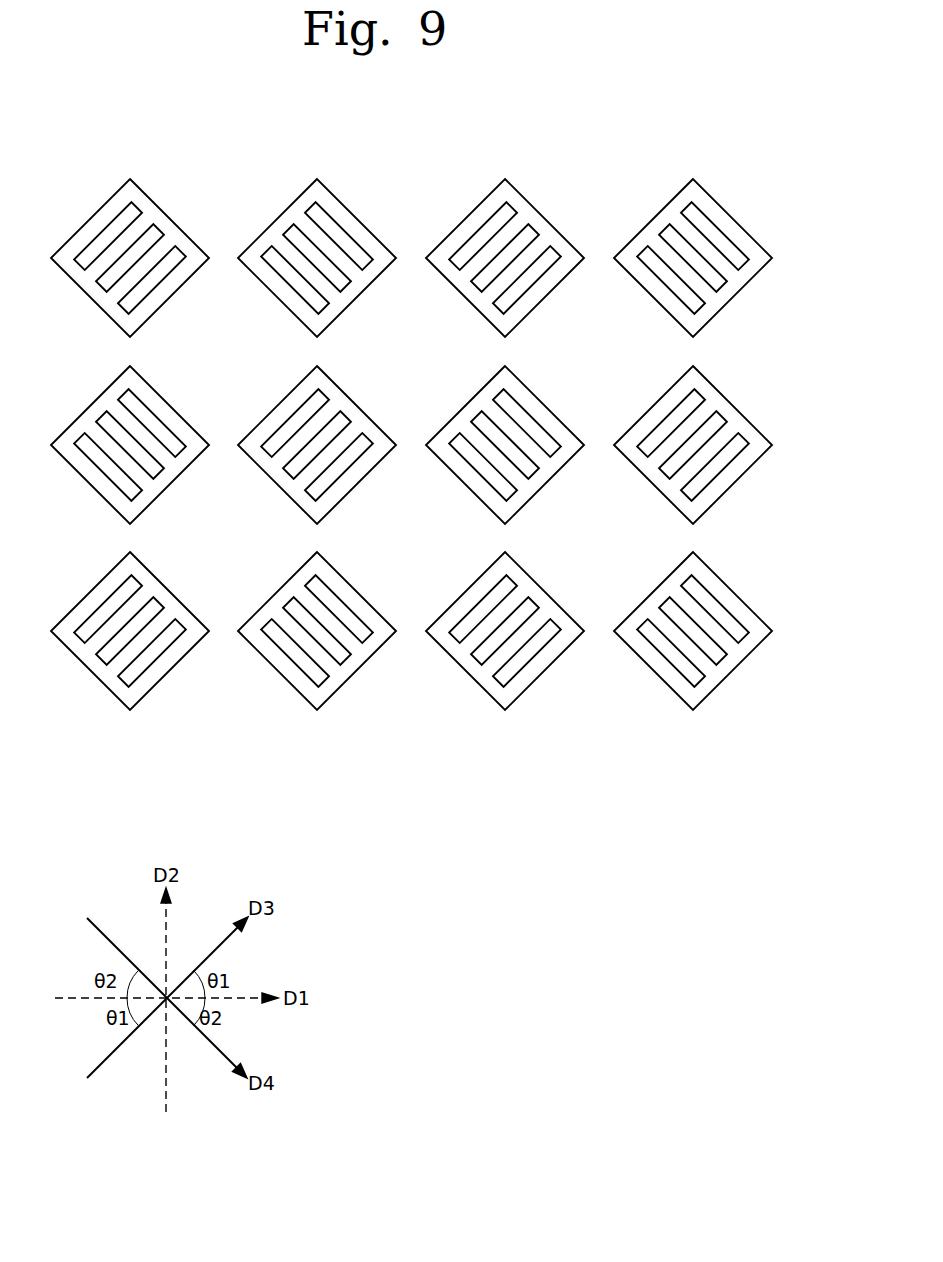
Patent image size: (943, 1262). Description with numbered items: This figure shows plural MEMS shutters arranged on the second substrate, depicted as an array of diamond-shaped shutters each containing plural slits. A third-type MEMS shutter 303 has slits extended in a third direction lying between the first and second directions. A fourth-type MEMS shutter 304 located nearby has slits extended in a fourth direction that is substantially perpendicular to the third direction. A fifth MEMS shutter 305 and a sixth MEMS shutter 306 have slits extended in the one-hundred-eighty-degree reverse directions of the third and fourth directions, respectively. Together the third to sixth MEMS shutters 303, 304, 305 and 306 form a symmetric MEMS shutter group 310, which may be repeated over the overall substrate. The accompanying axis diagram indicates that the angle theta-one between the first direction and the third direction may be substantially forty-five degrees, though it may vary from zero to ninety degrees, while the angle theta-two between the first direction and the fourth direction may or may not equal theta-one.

The third-type MEMS shutter 303 is at (653, 483).
The fourth-type MEMS shutter 304 is at (693, 661).
The fifth MEMS shutter 305 is at (517, 700).
The sixth MEMS shutter 306 is at (540, 490).
The symmetric MEMS shutter group 310 is at (599, 589).